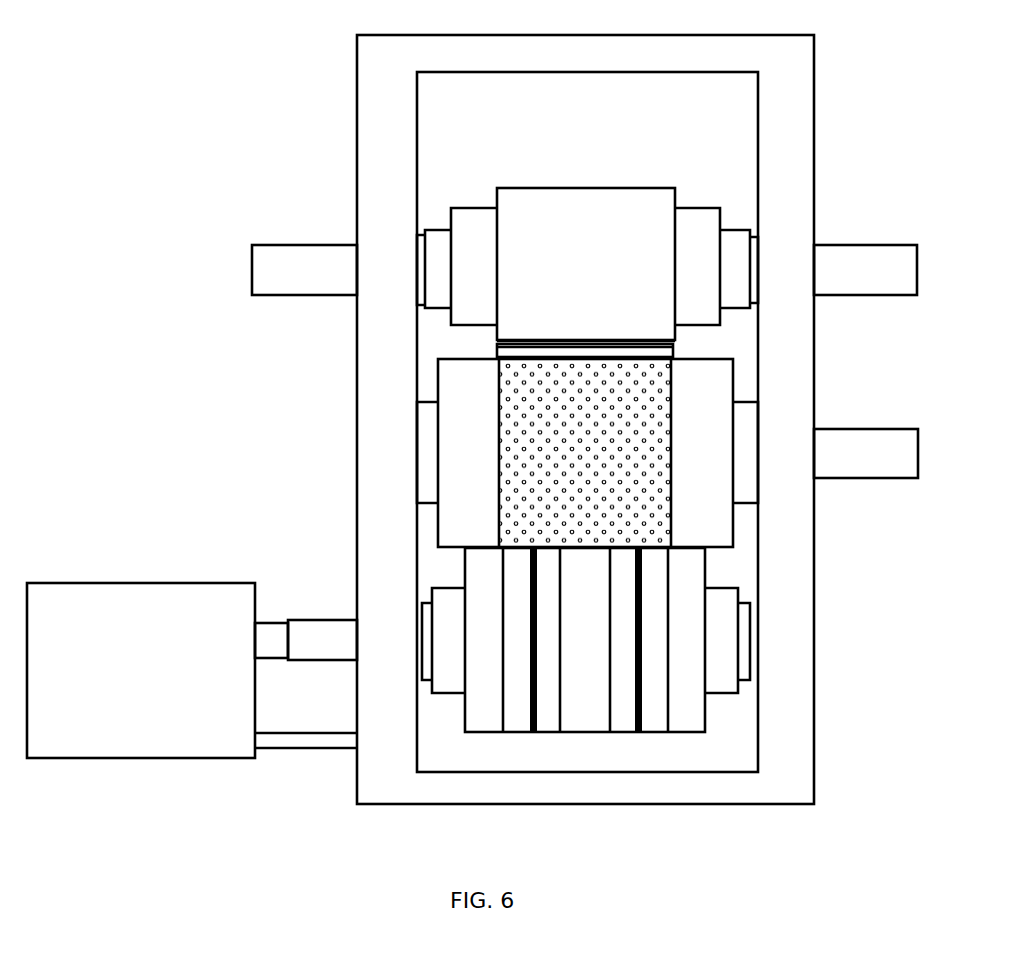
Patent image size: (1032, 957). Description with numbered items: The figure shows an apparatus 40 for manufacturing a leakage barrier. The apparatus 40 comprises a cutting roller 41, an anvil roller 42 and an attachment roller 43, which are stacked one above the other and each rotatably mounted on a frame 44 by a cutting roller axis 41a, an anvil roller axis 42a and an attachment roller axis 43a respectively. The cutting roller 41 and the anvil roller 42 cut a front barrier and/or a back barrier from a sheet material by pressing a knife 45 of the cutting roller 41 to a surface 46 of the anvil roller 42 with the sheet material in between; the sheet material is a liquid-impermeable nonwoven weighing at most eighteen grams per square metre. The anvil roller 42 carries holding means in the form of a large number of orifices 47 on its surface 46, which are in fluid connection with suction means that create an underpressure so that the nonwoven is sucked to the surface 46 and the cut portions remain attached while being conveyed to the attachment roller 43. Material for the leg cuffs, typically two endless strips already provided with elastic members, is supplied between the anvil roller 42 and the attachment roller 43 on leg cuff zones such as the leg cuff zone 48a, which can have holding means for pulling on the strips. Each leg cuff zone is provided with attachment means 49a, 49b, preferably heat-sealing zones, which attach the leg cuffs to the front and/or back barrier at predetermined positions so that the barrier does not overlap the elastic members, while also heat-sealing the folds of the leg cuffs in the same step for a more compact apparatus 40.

The apparatus 40 is at (519, 415).
The cutting roller 41 is at (647, 279).
The cutting roller axis 41a is at (283, 265).
The anvil roller 42 is at (587, 453).
The anvil roller axis 42a is at (863, 441).
The attachment roller 43 is at (672, 697).
The attachment roller axis 43a is at (312, 633).
The frame 44 is at (795, 137).
The knife 45 is at (653, 352).
The surface 46 is at (484, 348).
The orifices 47 is at (542, 476).
The leg cuff zone 48a is at (545, 720).
The attachment means 49a is at (532, 733).
The attachment means 49b is at (637, 733).